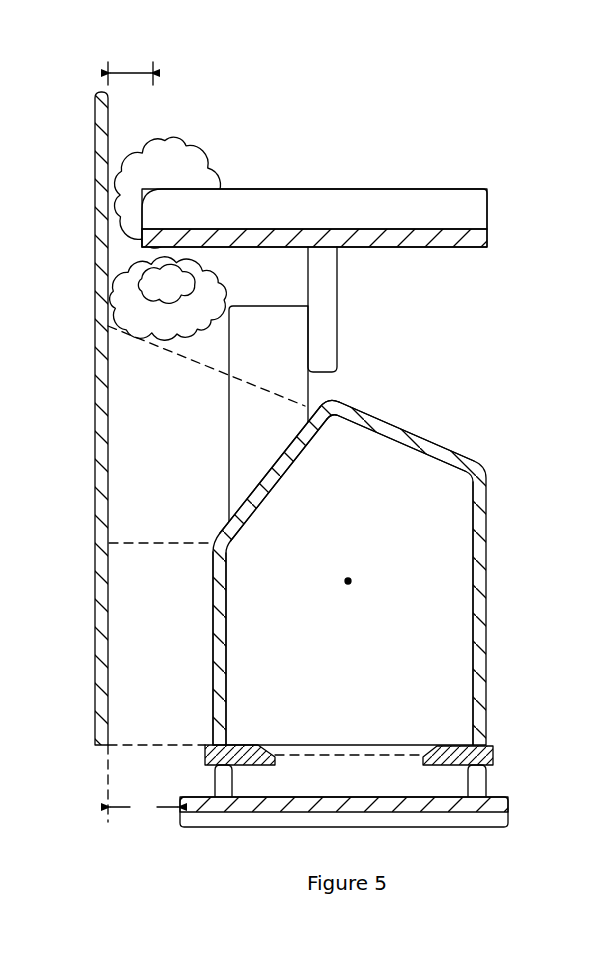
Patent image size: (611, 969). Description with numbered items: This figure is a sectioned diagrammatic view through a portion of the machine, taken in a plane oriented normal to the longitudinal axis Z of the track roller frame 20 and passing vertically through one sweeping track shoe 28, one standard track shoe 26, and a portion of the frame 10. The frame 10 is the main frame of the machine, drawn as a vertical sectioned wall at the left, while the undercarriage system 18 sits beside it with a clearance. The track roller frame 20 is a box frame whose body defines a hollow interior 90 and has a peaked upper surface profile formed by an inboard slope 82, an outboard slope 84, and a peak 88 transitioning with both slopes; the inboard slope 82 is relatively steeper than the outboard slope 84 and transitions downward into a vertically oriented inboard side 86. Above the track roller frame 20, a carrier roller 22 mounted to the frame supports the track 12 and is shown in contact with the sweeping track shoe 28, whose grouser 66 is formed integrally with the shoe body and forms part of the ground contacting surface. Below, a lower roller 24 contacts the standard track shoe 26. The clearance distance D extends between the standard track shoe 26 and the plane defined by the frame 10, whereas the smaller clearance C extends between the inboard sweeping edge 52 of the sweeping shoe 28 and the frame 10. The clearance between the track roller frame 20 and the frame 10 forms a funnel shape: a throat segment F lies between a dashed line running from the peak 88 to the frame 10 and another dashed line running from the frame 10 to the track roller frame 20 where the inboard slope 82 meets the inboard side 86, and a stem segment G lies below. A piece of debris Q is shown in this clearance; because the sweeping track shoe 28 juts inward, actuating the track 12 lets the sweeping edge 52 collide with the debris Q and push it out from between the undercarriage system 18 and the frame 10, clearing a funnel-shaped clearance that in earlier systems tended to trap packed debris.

The frame 10 is at (100, 572).
The track 12 is at (315, 223).
The undercarriage system 18 is at (512, 716).
The track roller frame 20 is at (344, 545).
The carrier roller 22 is at (330, 284).
The lower roller 24 is at (480, 772).
The standard track shoe 26 is at (498, 804).
The sweeping track shoe 28 is at (440, 240).
The inboard sweeping edge 52 is at (142, 243).
The grouser 66 is at (440, 200).
The inboard slope 82 is at (274, 450).
The outboard slope 84 is at (404, 428).
The inboard side 86 is at (213, 628).
The peak 88 is at (334, 400).
The hollow interior 90 is at (446, 620).
The piece of debris Q is at (200, 152).
The longitudinal axis Z is at (348, 581).
The clearance C is at (128, 72).
The clearance distance D is at (144, 807).
The throat segment F is at (143, 492).
The stem segment G is at (143, 684).